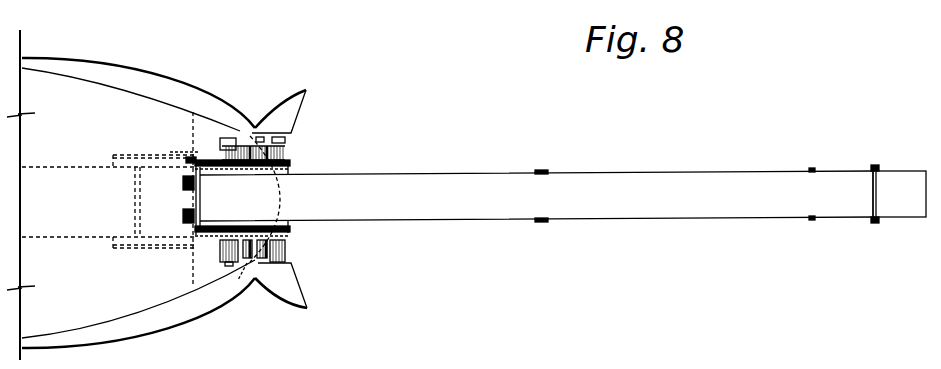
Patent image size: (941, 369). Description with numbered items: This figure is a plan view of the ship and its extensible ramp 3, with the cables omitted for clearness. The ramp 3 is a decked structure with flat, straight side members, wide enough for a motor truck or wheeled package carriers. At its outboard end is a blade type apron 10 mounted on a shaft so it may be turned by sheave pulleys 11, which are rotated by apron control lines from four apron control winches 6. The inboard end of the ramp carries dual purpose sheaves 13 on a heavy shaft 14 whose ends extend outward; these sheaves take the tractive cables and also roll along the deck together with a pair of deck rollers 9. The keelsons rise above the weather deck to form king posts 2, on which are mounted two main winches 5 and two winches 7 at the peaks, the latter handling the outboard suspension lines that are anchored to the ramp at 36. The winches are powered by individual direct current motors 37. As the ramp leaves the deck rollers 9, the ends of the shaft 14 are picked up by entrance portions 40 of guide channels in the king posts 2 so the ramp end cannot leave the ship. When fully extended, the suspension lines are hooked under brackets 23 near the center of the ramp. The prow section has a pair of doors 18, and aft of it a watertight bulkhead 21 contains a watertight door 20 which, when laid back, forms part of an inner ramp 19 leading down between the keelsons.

The king posts 2 is at (138, 152).
The extensible ramp 3 is at (666, 172).
The main winches 5 is at (222, 225).
The apron control winches 6 is at (262, 172).
The winches 7 is at (286, 224).
The deck rollers 9 is at (182, 186).
The blade type apron 10 is at (897, 207).
The sheave pulleys 11 is at (878, 166).
The dual purpose sheaves 13 is at (232, 263).
The heavy shaft 14 is at (229, 136).
The doors 18 is at (298, 87).
The inner ramp 19 is at (55, 227).
The watertight door 20 is at (190, 201).
The watertight bulkhead 21 is at (192, 271).
The brackets 23 is at (548, 168).
The anchor points 36 is at (809, 167).
The direct current motors 37 is at (288, 140).
The entrance portions 40 is at (190, 157).